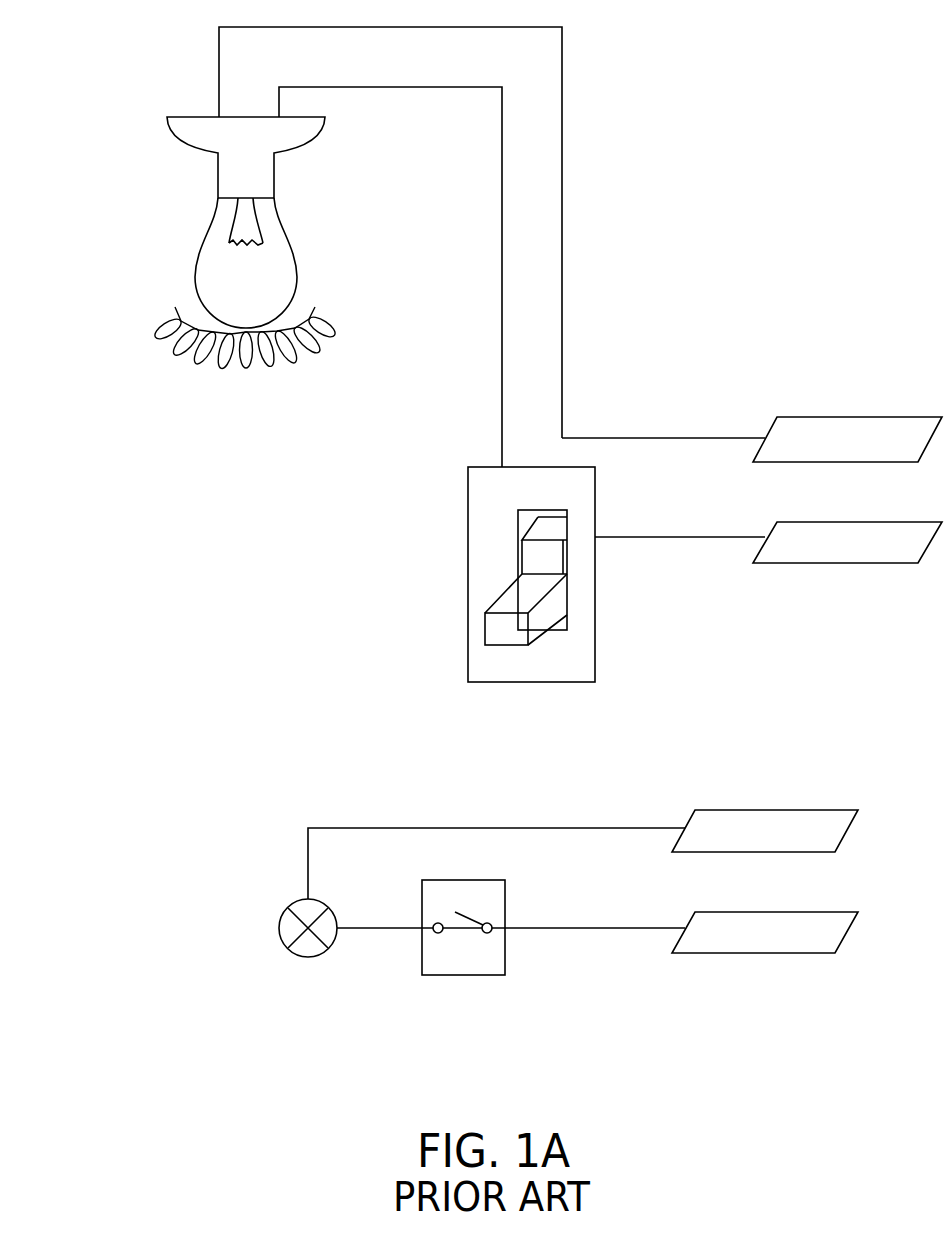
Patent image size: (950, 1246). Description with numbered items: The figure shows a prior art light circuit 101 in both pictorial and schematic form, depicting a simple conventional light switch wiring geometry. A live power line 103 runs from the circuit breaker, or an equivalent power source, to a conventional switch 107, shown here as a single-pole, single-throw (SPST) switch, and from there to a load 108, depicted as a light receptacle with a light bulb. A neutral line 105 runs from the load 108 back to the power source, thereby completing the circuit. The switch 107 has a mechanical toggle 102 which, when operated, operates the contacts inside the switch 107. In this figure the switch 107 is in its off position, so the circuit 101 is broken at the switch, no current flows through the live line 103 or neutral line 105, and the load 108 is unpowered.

The light circuit 101 is at (110, 421).
The toggle 102 is at (495, 628).
The live power line 103 is at (690, 540).
The neutral line 105 is at (688, 437).
The switch 107 is at (468, 546).
The load 108 is at (183, 140).